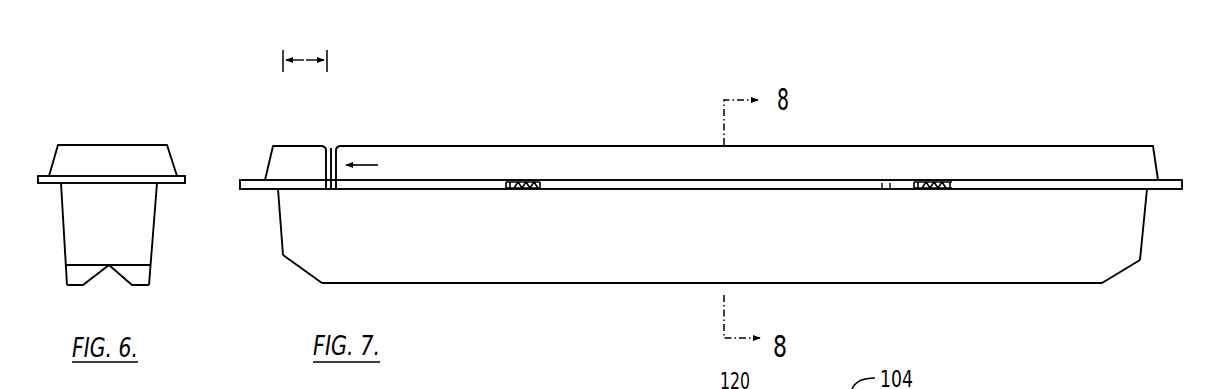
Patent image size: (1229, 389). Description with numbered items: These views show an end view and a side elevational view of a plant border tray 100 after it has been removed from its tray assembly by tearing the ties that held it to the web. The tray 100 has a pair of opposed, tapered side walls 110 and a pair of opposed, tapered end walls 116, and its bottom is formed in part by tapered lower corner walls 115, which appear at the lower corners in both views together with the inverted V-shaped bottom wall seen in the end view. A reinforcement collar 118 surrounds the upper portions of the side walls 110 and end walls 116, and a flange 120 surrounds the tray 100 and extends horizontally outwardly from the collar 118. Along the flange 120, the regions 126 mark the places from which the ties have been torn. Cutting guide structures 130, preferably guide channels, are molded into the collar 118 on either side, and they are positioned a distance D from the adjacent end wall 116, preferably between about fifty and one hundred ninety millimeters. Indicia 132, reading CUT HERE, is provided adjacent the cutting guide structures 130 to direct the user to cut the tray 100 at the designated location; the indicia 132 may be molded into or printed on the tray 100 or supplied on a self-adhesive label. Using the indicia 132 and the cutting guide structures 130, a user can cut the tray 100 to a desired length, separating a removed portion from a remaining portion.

In FIG. 6, the tray 100 is at (121, 78).
In FIG. 7, the tray 100 is at (860, 83).
In FIG. 7, the side wall 110 is at (767, 265).
In FIG. 6, the tapered lower corner wall 115 is at (78, 274).
In FIG. 7, the tapered lower corner wall 115 is at (297, 267).
In FIG. 6, the end wall 116 is at (138, 233).
In FIG. 7, the end wall 116 is at (272, 233).
In FIG. 6, the reinforcement collar 118 is at (143, 155).
In FIG. 7, the reinforcement collar 118 is at (997, 168).
In FIG. 6, the flange 120 is at (182, 173).
In FIG. 7, the flange 120 is at (858, 185).
In FIG. 7, the torn tie regions 126 is at (515, 192).
In FIG. 7, the cutting guide structure 130 is at (325, 163).
In FIG. 7, the indicia 132 is at (383, 146).
In FIG. 7, the distance D is at (307, 58).